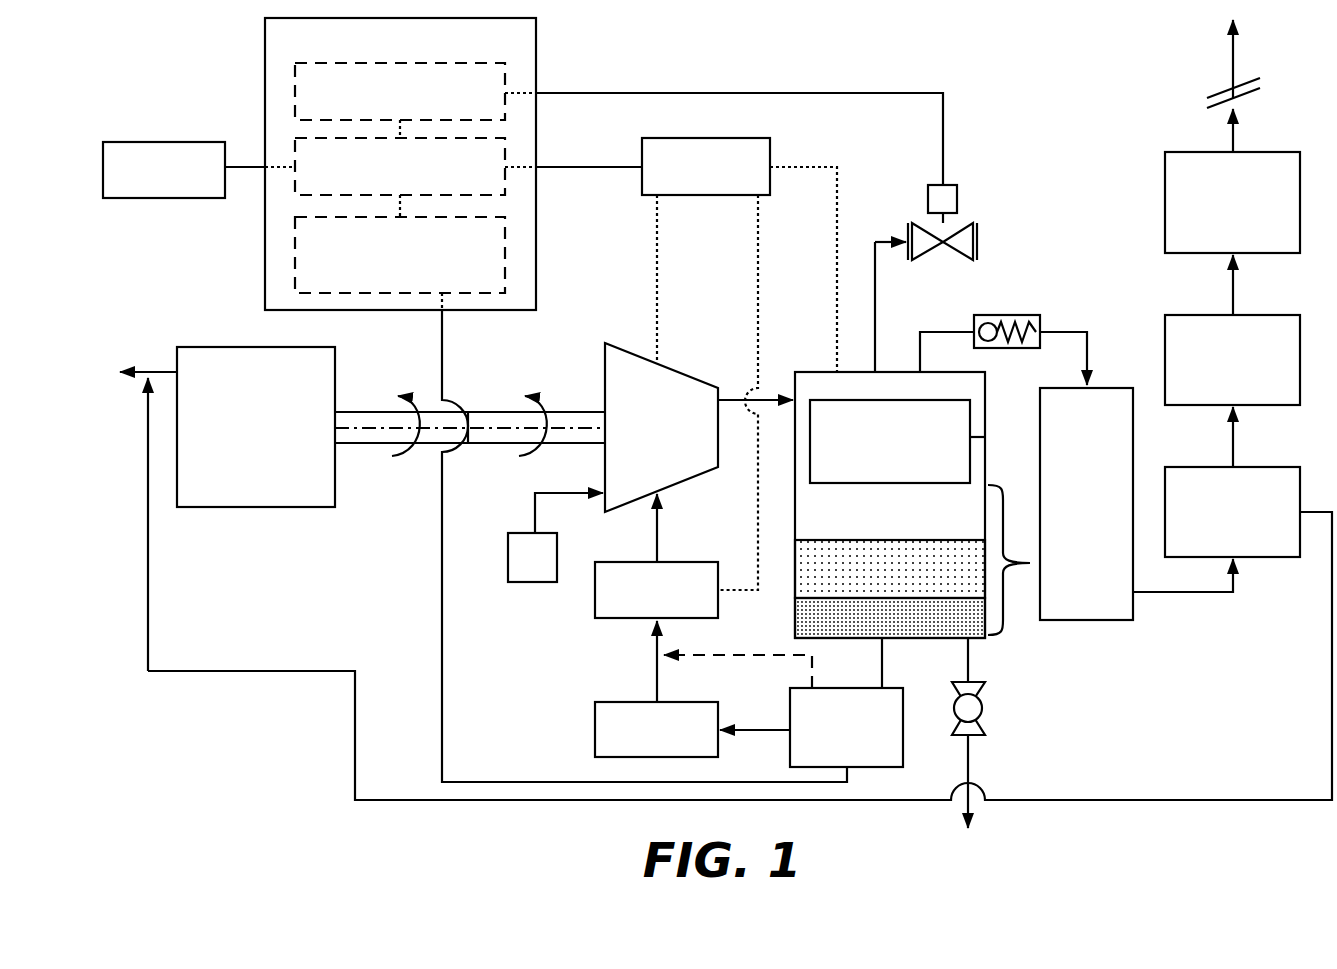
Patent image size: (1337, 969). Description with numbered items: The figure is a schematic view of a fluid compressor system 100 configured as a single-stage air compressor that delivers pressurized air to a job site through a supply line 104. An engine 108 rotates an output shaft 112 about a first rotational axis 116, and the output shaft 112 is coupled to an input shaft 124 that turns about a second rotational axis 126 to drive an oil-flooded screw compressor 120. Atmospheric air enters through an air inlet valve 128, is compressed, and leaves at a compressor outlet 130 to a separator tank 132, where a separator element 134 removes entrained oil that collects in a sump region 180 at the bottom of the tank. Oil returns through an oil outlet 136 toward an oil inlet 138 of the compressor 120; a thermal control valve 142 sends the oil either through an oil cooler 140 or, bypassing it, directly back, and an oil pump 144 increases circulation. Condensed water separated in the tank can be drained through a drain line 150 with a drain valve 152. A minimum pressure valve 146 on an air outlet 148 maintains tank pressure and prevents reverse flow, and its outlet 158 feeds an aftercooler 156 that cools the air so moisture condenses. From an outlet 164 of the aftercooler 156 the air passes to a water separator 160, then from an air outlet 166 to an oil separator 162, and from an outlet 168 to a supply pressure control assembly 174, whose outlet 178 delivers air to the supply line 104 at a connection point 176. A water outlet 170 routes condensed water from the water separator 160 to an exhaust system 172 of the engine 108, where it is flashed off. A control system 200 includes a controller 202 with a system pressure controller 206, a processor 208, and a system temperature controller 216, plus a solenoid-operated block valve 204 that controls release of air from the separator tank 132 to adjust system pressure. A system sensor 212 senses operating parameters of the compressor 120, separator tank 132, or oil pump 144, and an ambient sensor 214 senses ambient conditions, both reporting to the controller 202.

The fluid compressor system 100 is at (248, 750).
The supply line 104 is at (1235, 65).
The engine 108 is at (253, 507).
The output shaft 112 is at (363, 443).
The first rotational axis 116 is at (348, 427).
The compressor 120 is at (628, 352).
The input shaft 124 is at (517, 443).
The second rotational axis 126 is at (577, 427).
The air inlet valve 128 is at (508, 563).
The compressor outlet 130 is at (733, 400).
The separator tank 132 is at (812, 372).
The separator element 134 is at (985, 437).
The oil outlet 136 is at (884, 661).
The oil inlet 138 is at (657, 536).
The oil cooler 140 is at (595, 720).
The thermal control valve 142 is at (790, 693).
The oil pump 144 is at (595, 603).
The minimum pressure valve 146 is at (1010, 315).
The air outlet 148 is at (922, 332).
The drain line 150 is at (968, 760).
The drain valve 152 is at (985, 705).
The aftercooler 156 is at (1110, 620).
The outlet 158 is at (1081, 324).
The water separator 160 is at (1210, 467).
The oil separator 162 is at (1210, 315).
The outlet 164 is at (1195, 592).
The air outlet 166 is at (1235, 448).
The outlet 168 is at (1235, 300).
The water outlet 170 is at (1253, 800).
The exhaust system 172 is at (165, 372).
The supply pressure control assembly 174 is at (1210, 152).
The connection point 176 is at (1222, 95).
The outlet 178 is at (1235, 135).
The sump region 180 is at (1030, 563).
The control system 200 is at (724, 62).
The controller 202 is at (536, 243).
The system pressure control device 204 is at (957, 198).
The system pressure controller 206 is at (295, 95).
The processor 208 is at (295, 150).
The system sensor 212 is at (770, 152).
The ambient sensor 214 is at (165, 198).
The system temperature controller 216 is at (295, 245).